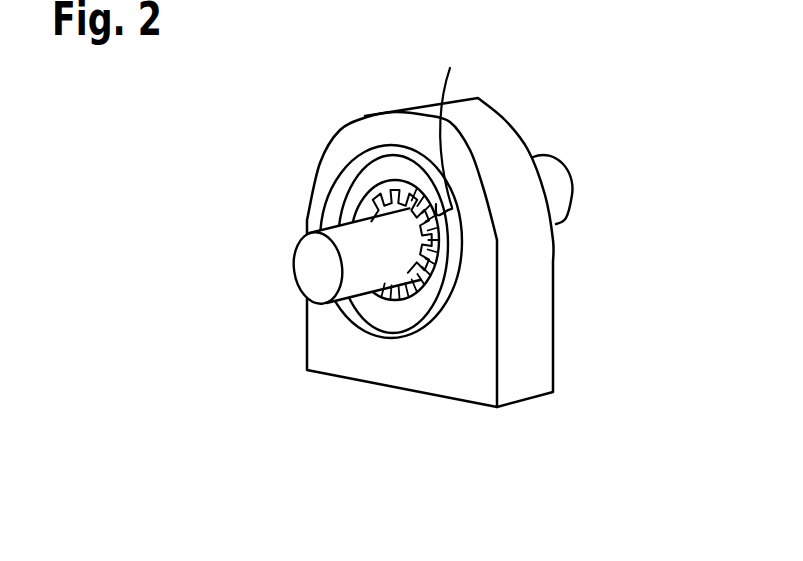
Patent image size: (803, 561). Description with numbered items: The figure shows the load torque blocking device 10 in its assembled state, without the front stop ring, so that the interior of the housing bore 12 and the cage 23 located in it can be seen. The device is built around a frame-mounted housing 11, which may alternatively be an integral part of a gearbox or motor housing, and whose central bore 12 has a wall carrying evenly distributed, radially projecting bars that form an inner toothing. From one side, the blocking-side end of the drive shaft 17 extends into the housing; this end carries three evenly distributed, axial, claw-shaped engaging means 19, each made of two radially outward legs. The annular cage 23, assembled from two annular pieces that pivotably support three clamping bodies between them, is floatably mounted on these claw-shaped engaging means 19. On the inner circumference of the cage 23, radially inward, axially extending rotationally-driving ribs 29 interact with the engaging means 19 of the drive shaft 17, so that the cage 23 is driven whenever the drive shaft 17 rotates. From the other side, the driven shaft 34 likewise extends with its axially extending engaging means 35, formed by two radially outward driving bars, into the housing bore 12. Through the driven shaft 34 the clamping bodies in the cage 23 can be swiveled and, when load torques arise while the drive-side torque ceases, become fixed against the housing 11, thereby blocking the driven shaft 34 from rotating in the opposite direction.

The load torque blocking device 10 is at (514, 110).
The housing 11 is at (543, 337).
The central bore 12 is at (358, 317).
The drive shaft 17 is at (563, 186).
The engaging means 19 is at (353, 198).
The annular cage 23 is at (457, 268).
The rotationally-driving rib 29 is at (388, 179).
The driven shaft 34 is at (307, 269).
The engaging means 35 is at (454, 124).